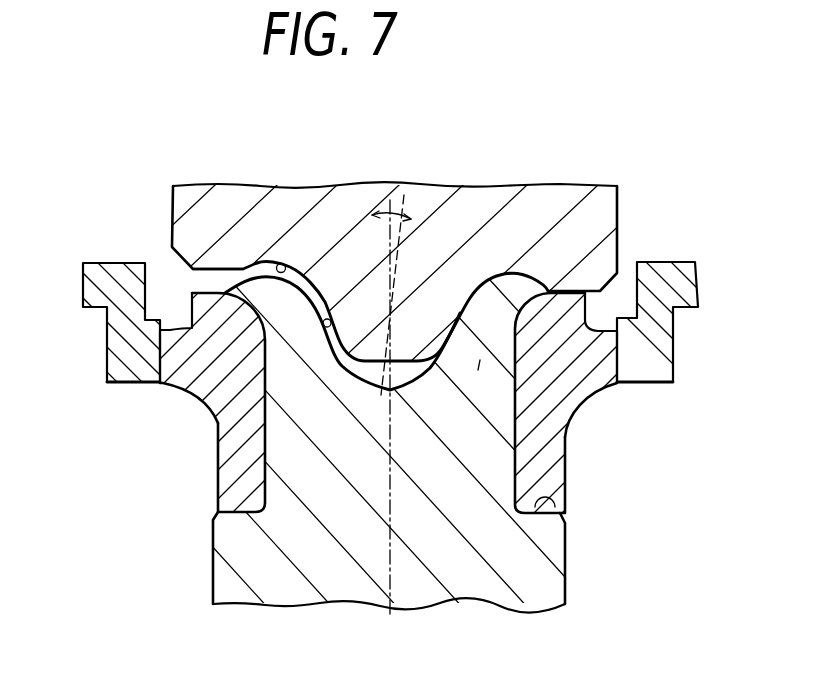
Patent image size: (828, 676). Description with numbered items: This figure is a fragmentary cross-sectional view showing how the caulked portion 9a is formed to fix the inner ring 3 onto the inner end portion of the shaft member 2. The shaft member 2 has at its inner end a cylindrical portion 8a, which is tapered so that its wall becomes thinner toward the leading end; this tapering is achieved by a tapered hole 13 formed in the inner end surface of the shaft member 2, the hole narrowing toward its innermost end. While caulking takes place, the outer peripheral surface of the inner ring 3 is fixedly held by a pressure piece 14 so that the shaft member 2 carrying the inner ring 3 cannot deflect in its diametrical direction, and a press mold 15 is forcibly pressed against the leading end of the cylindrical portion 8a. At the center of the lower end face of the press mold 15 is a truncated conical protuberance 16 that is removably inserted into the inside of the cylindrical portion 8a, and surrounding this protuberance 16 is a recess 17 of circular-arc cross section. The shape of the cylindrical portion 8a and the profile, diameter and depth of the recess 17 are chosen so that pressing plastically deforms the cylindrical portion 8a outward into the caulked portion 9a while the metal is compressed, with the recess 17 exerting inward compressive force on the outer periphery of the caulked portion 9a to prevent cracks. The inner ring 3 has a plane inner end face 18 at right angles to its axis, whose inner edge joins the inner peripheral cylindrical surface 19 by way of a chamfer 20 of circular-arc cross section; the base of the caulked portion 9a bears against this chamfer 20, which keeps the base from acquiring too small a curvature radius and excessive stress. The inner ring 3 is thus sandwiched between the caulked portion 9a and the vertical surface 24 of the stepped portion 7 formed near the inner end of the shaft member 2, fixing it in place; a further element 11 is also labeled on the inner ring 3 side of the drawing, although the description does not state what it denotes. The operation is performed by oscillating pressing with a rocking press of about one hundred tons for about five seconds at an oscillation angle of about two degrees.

The shaft member 2 is at (358, 582).
The inner ring 3 is at (567, 437).
The stepped portion 7 is at (197, 490).
The cylindrical portion 8a is at (180, 387).
The caulked portion 9a is at (503, 262).
The shoulder fillet 11 is at (593, 400).
The tapered hole 13 is at (207, 413).
The pressure piece 14 is at (113, 347).
The press mold 15 is at (275, 203).
The truncated conical protuberance 16 is at (345, 372).
The recess 17 is at (287, 262).
The inner end face 18 is at (206, 268).
The inner peripheral cylindrical surface 19 is at (513, 417).
The chamfer 20 is at (478, 370).
The vertical surface 24 is at (568, 502).